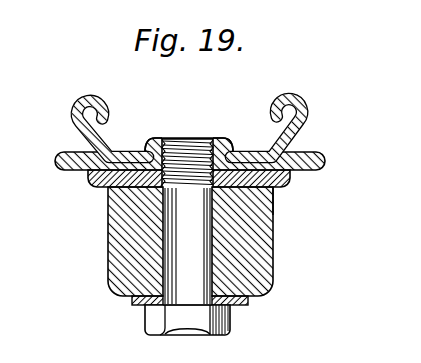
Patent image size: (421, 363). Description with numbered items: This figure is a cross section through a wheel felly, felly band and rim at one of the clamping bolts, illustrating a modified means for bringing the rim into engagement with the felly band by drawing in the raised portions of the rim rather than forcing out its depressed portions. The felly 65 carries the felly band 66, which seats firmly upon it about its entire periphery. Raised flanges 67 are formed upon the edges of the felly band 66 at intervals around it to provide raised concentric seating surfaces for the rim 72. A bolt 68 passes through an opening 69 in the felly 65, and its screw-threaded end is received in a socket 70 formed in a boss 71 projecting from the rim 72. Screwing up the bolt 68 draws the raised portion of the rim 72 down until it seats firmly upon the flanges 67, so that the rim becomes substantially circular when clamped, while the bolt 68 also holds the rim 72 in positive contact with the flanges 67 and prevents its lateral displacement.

The felly 65 is at (262, 265).
The felly band 66 is at (274, 200).
The raised flange 67 is at (291, 174).
The bolt 68 is at (180, 263).
The opening 69 is at (160, 232).
The socket 70 is at (146, 137).
The boss 71 is at (223, 141).
The rim 72 is at (325, 155).